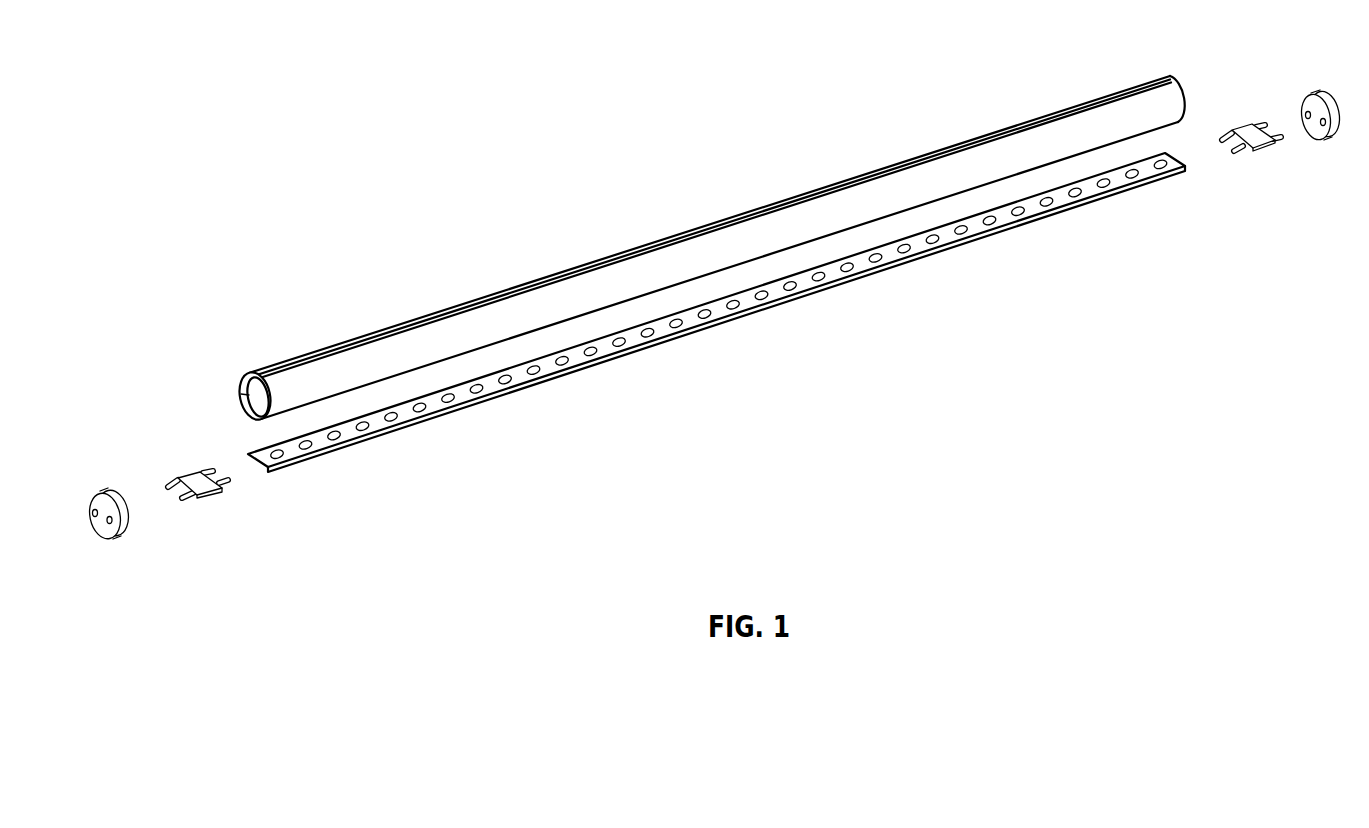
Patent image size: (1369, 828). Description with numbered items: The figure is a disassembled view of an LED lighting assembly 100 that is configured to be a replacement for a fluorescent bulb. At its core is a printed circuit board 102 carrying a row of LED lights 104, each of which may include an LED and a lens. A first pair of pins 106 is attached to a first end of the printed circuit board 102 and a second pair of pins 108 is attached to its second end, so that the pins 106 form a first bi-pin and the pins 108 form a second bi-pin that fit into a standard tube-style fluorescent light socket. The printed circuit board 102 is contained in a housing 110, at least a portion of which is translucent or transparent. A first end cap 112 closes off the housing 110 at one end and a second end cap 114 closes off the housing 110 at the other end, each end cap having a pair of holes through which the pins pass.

The LED lighting assembly 100 is at (725, 323).
The printed circuit board 102 is at (716, 312).
The LED lights 104 is at (733, 306).
The first pair of pins 106 is at (176, 481).
The second pair of pins 108 is at (1262, 128).
The housing 110 is at (658, 262).
The first end cap 112 is at (120, 538).
The second end cap 114 is at (1325, 137).